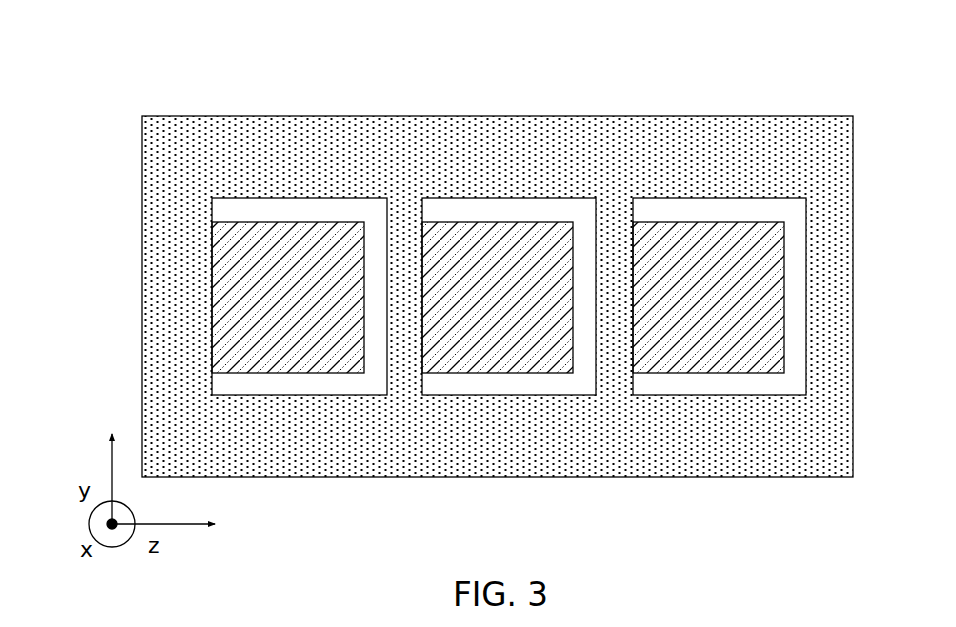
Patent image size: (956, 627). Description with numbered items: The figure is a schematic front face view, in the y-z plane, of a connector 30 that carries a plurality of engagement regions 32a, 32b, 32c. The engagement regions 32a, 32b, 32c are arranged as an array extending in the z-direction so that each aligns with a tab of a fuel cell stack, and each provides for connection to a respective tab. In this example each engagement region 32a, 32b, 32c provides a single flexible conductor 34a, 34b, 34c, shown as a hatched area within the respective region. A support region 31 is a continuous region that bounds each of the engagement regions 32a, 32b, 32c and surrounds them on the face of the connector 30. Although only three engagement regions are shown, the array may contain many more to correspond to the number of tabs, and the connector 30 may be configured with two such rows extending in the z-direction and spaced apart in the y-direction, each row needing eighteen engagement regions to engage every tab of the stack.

The connector 30 is at (518, 282).
The support region 31 is at (520, 282).
The engagement region 32a is at (299, 282).
The engagement region 32b is at (509, 282).
The engagement region 32c is at (719, 282).
The flexible conductor 34a is at (246, 348).
The flexible conductor 34b is at (460, 346).
The flexible conductor 34c is at (665, 346).